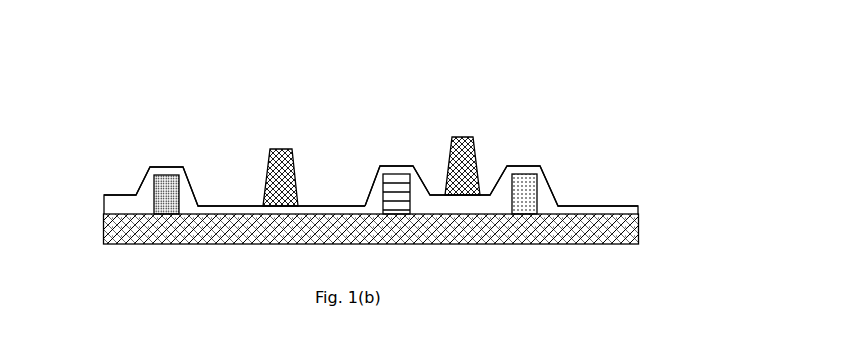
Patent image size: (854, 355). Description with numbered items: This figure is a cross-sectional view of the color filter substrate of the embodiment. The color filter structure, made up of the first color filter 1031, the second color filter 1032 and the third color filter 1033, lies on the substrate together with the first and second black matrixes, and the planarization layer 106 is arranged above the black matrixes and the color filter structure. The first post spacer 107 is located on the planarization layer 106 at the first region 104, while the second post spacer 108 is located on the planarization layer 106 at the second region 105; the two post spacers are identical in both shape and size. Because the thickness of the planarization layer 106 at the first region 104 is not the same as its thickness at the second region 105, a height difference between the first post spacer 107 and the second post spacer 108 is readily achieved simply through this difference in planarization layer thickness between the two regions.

The first region 104 is at (198, 140).
The second region 105 is at (423, 141).
The planarization layer 106 is at (638, 206).
The first post spacer 107 is at (272, 149).
The second post spacer 108 is at (470, 137).
The first color filter 1031 is at (150, 167).
The second color filter 1032 is at (380, 166).
The third color filter 1033 is at (540, 166).